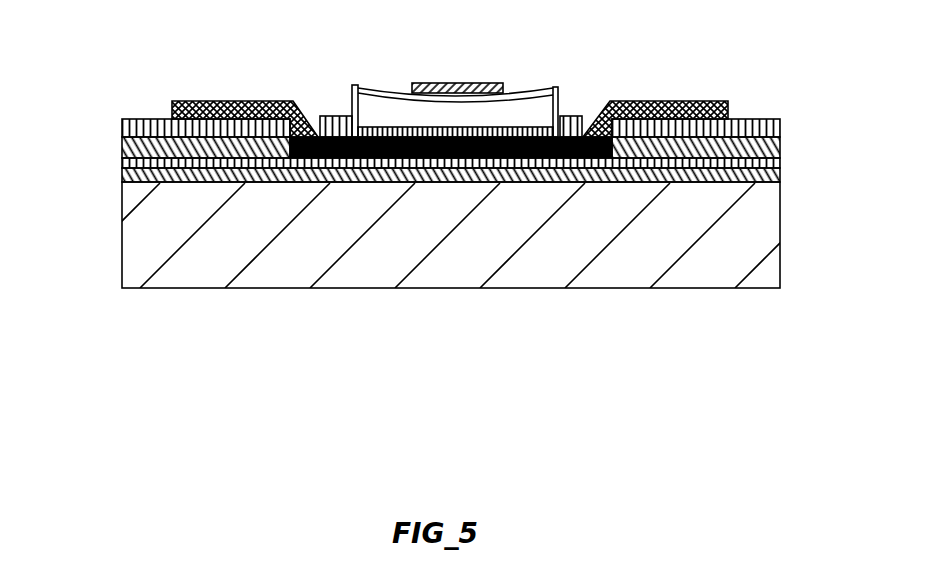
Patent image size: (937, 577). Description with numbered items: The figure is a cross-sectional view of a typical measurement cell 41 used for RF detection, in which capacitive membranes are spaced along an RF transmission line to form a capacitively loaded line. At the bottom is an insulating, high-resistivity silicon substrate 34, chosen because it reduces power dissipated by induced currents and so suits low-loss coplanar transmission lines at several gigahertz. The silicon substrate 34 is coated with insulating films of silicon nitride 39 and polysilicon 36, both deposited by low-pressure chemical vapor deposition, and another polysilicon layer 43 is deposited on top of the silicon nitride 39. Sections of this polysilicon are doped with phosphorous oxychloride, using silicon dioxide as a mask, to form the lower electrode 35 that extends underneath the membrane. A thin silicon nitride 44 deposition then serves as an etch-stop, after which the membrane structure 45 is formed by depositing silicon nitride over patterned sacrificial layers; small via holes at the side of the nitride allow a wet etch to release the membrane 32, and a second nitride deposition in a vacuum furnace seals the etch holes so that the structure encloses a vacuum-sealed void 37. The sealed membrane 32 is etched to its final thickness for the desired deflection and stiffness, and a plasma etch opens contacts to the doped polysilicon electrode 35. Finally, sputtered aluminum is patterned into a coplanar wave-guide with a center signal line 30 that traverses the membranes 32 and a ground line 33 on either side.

The center signal line 30 is at (453, 83).
The membrane 32 is at (513, 92).
The ground line 33 is at (248, 100).
The silicon substrate 34 is at (542, 267).
The lower electrode 35 is at (588, 160).
The polysilicon film 36 is at (120, 180).
The vacuum-sealed void 37 is at (377, 100).
The silicon nitride film 39 is at (777, 163).
The measurement cell 41 is at (215, 353).
The polysilicon layer 43 is at (120, 150).
The thin silicon nitride 44 is at (167, 128).
The membrane structure 45 is at (570, 115).